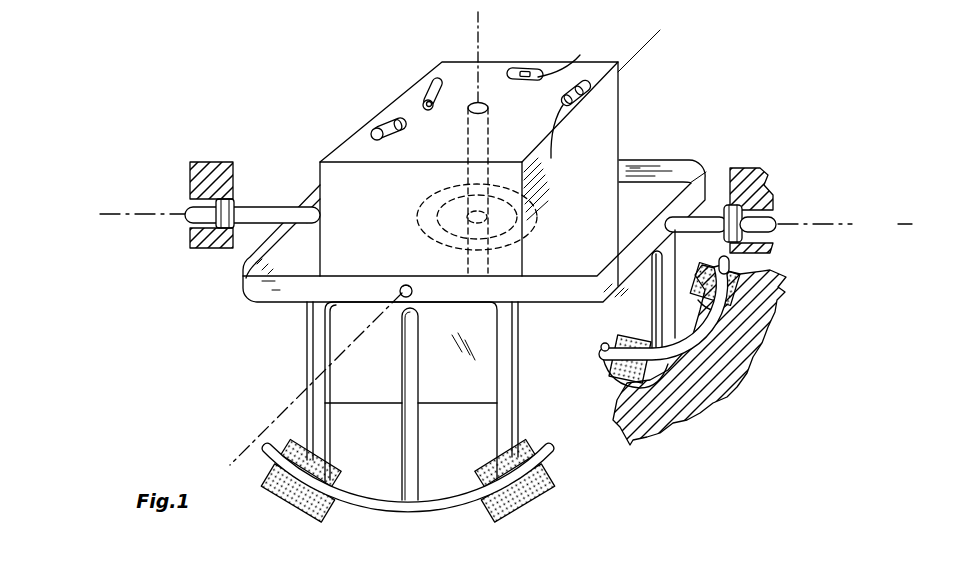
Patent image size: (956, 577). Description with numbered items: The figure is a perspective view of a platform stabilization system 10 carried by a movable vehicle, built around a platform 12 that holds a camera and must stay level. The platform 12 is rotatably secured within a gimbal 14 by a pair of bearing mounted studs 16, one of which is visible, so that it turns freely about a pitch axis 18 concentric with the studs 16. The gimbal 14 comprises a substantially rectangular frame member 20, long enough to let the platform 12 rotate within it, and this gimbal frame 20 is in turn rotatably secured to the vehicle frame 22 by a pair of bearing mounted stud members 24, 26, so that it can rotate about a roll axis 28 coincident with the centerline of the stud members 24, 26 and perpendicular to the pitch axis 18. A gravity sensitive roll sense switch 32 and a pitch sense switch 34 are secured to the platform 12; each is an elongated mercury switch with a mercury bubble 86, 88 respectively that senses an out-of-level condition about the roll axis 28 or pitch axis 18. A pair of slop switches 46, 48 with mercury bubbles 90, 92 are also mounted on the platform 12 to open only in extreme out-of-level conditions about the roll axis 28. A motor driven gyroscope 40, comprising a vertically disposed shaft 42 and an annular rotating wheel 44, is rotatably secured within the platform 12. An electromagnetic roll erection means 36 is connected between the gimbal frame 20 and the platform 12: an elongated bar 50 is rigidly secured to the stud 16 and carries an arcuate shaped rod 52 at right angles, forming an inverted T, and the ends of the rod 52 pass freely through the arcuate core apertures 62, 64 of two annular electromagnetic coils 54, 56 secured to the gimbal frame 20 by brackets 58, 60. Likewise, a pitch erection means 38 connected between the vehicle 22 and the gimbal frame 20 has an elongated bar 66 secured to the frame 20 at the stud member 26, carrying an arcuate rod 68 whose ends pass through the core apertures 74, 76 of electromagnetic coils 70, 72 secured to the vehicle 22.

The platform stabilization system 10 is at (336, 135).
The platform 12 is at (319, 160).
The gimbal 14 is at (275, 302).
The bearing mounted stud 16 is at (402, 285).
The pitch axis 18 is at (268, 420).
The gimbal frame member 20 is at (250, 286).
The vehicle frame 22 is at (205, 176).
The bearing mounted stud member 24 is at (262, 212).
The bearing mounted stud member 26 is at (716, 196).
The roll axis 28 is at (133, 214).
The roll sense switch 32 is at (595, 81).
The pitch sense switch 34 is at (540, 70).
The roll erection means 36 is at (414, 502).
The pitch erection means 38 is at (679, 344).
The motor driven gyroscope 40 is at (418, 210).
The shaft 42 is at (468, 132).
The annular rotating wheel 44 is at (537, 222).
The slop switch 46 is at (378, 132).
The slop switch 48 is at (433, 77).
The elongated bar 50 is at (420, 432).
The arcuate shaped rod 52 is at (358, 505).
The electromagnetic coil 54 is at (283, 480).
The electromagnetic coil 56 is at (530, 500).
The bracket 58 is at (322, 420).
The bracket 60 is at (513, 413).
The center core aperture 62 is at (318, 500).
The core aperture 64 is at (550, 462).
The elongated bar 66 is at (648, 290).
The arcuate rod 68 is at (716, 368).
The electromagnetic coil 70 is at (615, 373).
The electromagnetic coil 72 is at (742, 290).
The core aperture 74 is at (604, 354).
The core aperture 76 is at (732, 264).
The mercury bubble 86 is at (597, 93).
The mercury bubble 88 is at (520, 70).
The mercury bubble 90 is at (397, 124).
The mercury bubble 92 is at (426, 100).